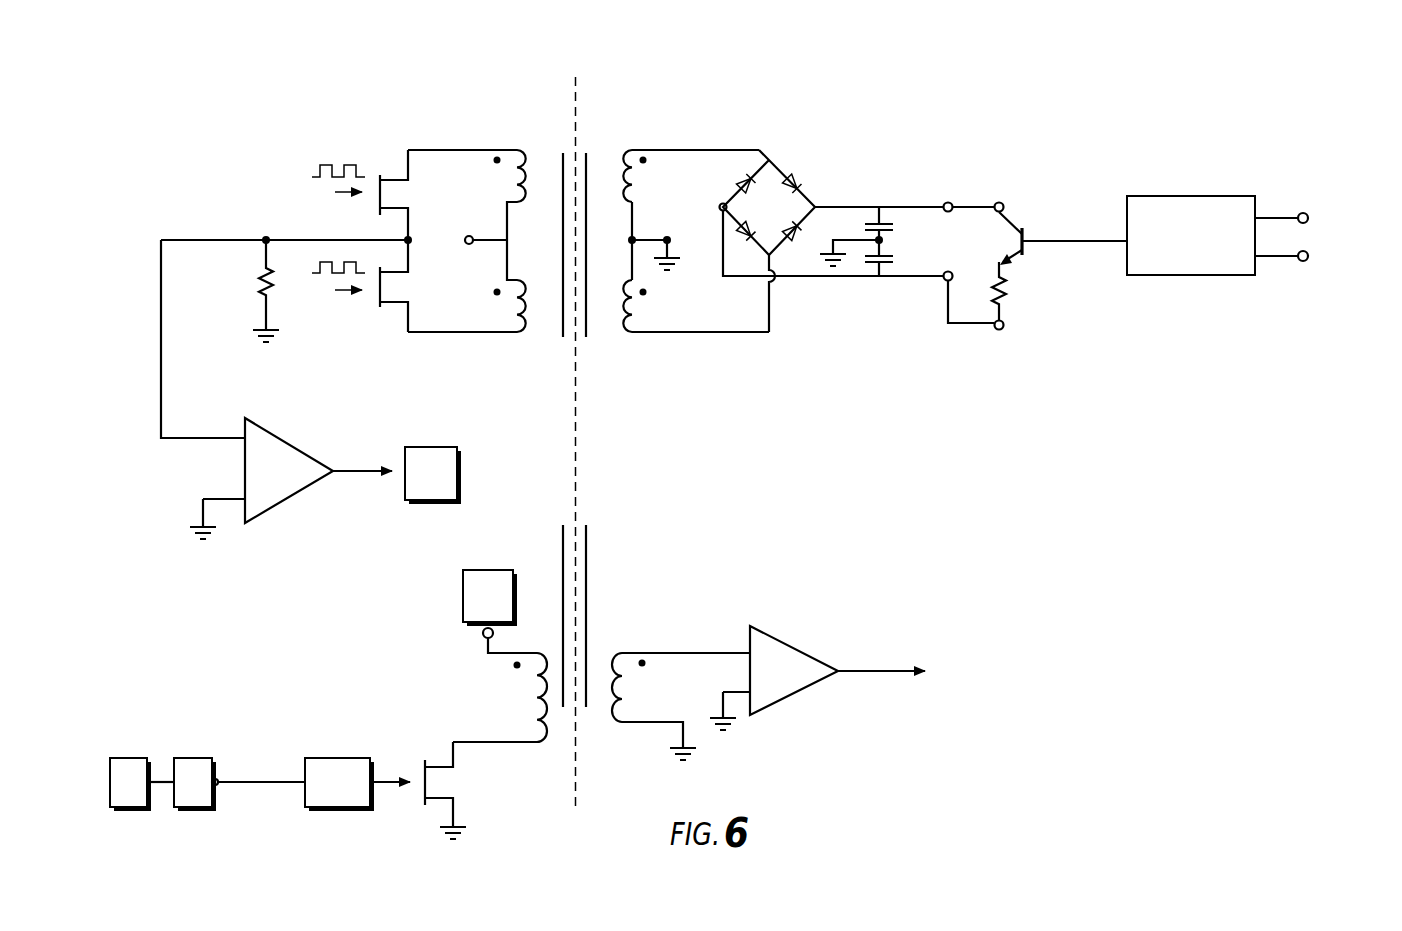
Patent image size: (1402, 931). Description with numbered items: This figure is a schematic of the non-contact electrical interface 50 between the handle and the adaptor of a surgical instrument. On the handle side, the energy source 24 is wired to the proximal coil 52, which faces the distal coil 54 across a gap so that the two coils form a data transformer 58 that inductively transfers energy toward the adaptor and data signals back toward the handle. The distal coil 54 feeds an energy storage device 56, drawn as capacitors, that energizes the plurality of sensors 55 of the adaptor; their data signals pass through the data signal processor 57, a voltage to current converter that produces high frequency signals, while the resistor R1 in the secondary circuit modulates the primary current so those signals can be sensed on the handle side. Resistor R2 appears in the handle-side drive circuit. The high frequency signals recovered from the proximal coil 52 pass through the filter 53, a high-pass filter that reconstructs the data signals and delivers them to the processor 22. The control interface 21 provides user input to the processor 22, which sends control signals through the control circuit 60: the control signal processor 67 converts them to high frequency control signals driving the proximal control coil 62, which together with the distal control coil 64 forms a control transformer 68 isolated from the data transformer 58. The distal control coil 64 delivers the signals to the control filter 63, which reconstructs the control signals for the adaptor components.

The control interface 21 is at (140, 796).
The processor 22 is at (442, 488).
The energy source 24 is at (498, 610).
The electrical interface 50 is at (924, 201).
The proximal coil 52 is at (508, 217).
The filter 53 is at (287, 485).
The distal coil 54 is at (633, 222).
The plurality of sensors 55 is at (1307, 238).
The energy storage device 56 is at (889, 218).
The data signal processor 57 is at (1203, 252).
The data transformer 58 is at (590, 104).
The control circuit 60 is at (285, 714).
The proximal control coil 62 is at (543, 733).
The control filter 63 is at (789, 686).
The distal control coil 64 is at (611, 710).
The control signal processor 67 is at (350, 796).
The control transformer 68 is at (599, 650).
The element R1 is at (1014, 291).
The resistor R2 is at (279, 291).